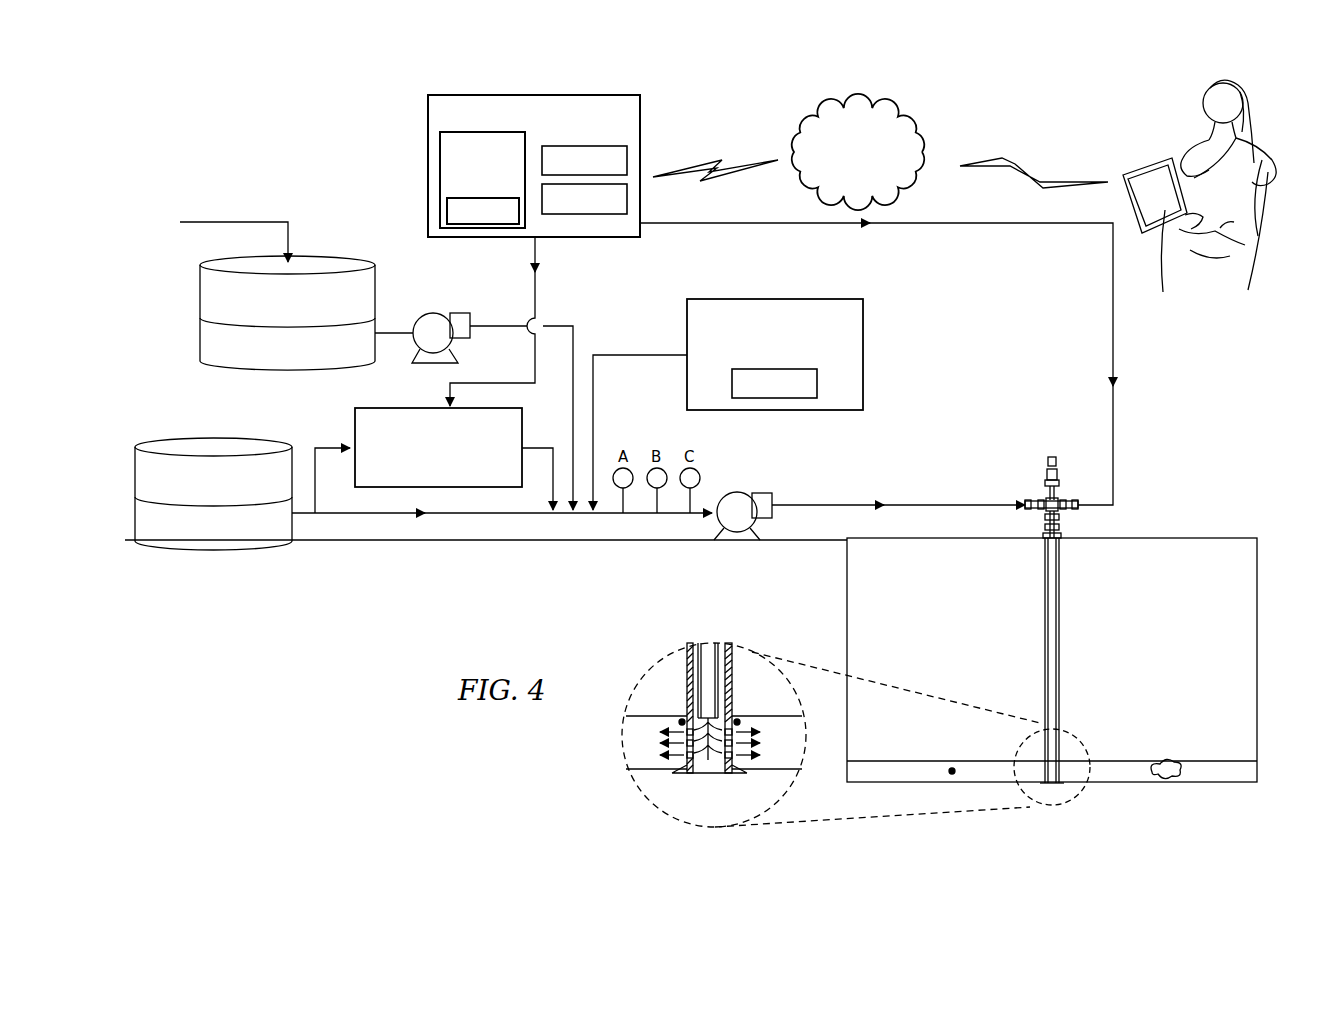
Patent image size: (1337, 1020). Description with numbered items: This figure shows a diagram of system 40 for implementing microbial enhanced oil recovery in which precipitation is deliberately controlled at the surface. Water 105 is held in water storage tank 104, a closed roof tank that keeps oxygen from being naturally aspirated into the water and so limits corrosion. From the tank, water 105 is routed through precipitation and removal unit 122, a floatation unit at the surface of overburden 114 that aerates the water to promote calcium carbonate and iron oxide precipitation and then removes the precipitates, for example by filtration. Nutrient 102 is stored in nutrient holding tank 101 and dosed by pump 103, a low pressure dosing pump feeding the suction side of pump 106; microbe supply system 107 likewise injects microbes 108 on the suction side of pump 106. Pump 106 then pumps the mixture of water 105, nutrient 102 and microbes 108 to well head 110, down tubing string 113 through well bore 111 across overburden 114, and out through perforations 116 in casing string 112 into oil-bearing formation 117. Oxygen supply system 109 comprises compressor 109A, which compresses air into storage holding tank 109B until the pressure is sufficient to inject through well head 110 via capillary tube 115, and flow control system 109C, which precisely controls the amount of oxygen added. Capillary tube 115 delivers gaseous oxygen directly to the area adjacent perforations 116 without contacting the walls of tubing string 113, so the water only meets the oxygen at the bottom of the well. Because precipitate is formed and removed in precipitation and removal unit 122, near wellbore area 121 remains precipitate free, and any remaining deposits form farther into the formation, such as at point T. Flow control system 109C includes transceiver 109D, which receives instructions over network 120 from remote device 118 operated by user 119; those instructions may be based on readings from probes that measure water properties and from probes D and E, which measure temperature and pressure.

The system 40 is at (289, 171).
The nutrient holding tank 101 is at (287, 313).
The nutrient 102 is at (287, 349).
The pump 103 is at (430, 349).
The water storage tank 104 is at (213, 494).
The water 105 is at (217, 529).
The pump 106 is at (734, 527).
The microbe supply system 107 is at (775, 354).
The microbes 108 is at (1195, 798).
The oxygen supply system 109 is at (429, 128).
The compressor 109A is at (584, 160).
The storage holding tank 109B is at (584, 199).
The flow control system 109C is at (482, 180).
The transceiver 109D is at (483, 211).
The well head 110 is at (1058, 477).
The well bore 111 is at (1044, 537).
The casing string 112 is at (1060, 570).
The tubing string 113 is at (1059, 597).
The overburden 114 is at (1257, 650).
The capillary tube 115 is at (1115, 346).
The perforations 116 is at (1060, 770).
The oil-bearing formation 117 is at (1257, 762).
The remote device 118 is at (1141, 165).
The user 119 is at (1186, 148).
The network 120 is at (858, 152).
The near wellbore area 121 is at (672, 733).
The precipitation and removal unit 122 is at (438, 447).
The point T is at (952, 771).
The probe D is at (738, 720).
The probe E is at (680, 720).